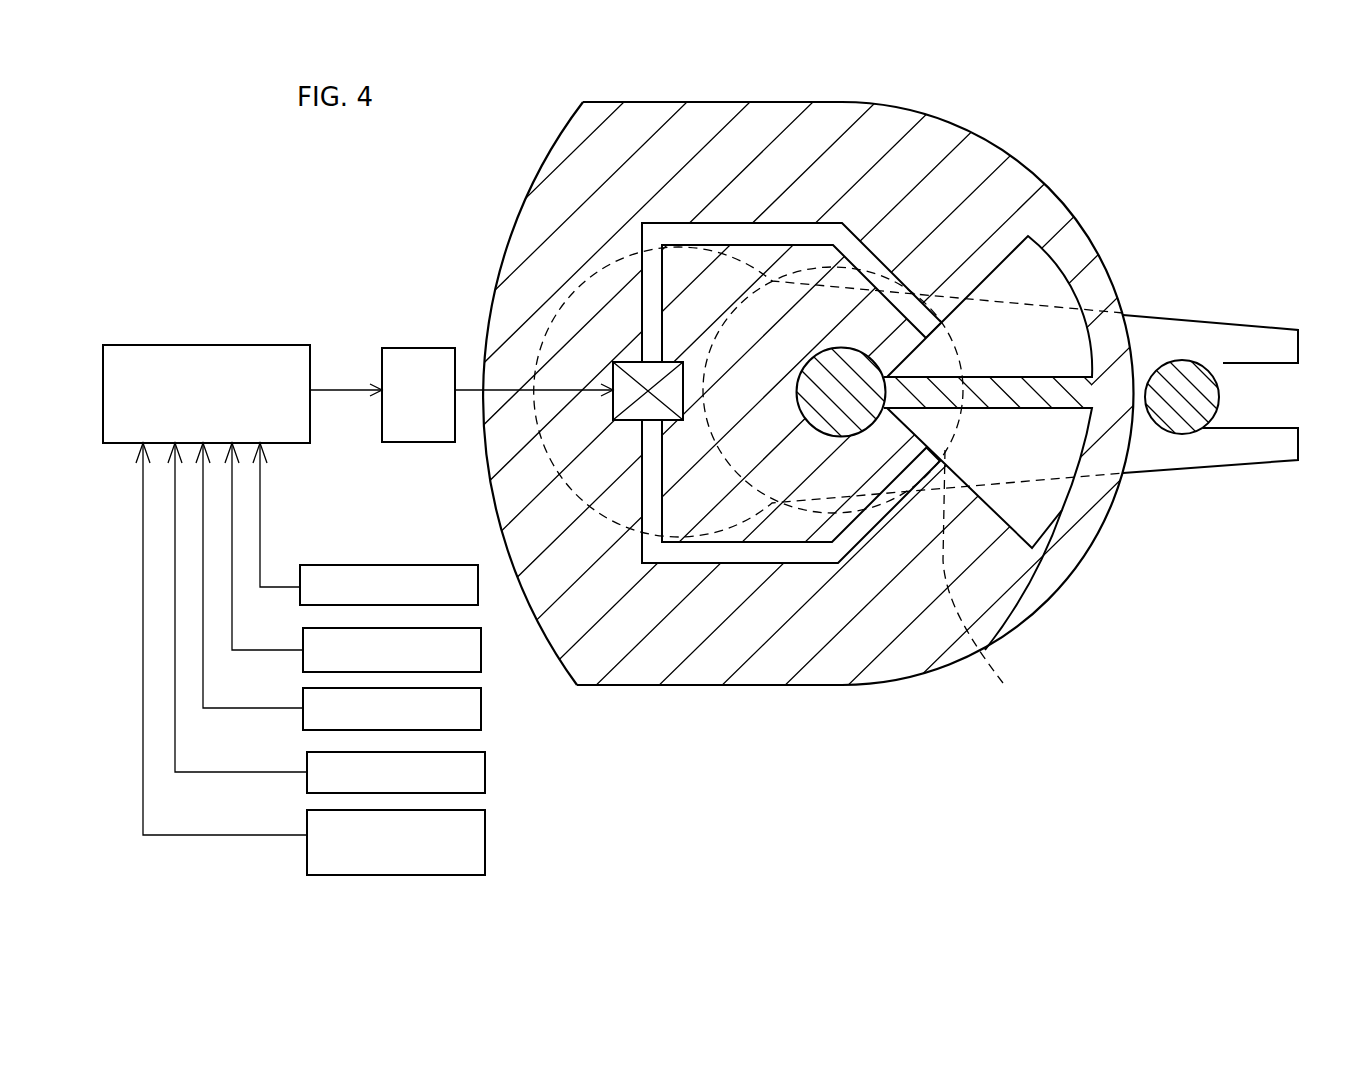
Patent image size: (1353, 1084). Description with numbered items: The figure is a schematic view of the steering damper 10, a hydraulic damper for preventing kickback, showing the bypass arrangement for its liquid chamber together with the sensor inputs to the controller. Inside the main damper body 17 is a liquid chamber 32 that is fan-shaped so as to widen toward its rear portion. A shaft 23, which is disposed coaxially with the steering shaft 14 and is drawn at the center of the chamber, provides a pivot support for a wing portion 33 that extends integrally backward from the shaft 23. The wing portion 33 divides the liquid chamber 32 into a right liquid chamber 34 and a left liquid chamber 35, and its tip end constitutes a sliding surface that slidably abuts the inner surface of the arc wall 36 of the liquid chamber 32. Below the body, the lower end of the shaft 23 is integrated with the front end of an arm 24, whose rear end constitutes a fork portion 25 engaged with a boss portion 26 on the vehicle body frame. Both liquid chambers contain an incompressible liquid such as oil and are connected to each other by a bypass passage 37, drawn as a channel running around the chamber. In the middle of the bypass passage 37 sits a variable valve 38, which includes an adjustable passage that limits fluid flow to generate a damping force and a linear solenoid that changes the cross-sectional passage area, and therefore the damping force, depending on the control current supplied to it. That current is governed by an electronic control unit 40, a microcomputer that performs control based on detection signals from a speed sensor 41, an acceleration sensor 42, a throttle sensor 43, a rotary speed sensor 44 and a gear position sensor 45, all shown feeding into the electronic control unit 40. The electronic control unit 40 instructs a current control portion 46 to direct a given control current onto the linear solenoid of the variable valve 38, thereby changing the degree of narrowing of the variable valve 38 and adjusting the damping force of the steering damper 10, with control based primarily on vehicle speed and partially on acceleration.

The steering damper 10 is at (676, 393).
The steering shaft 14 is at (872, 268).
The main damper body 17 is at (698, 687).
The shaft 23 is at (840, 428).
The arm 24 is at (985, 577).
The fork portion 25 is at (1252, 330).
The boss portion 26 is at (1200, 402).
The liquid chamber 32 is at (1065, 512).
The wing portion 33 is at (1110, 488).
The right liquid chamber 34 is at (1023, 268).
The left liquid chamber 35 is at (1018, 518).
The arc wall 36 is at (1065, 292).
The bypass passage 37 is at (778, 245).
The variable valve 38 is at (620, 368).
The electronic control unit 40 is at (178, 358).
The speed sensor 41 is at (372, 565).
The acceleration sensor 42 is at (463, 660).
The throttle sensor 43 is at (473, 718).
The rotary speed sensor 44 is at (473, 783).
The gear position sensor 45 is at (477, 848).
The current control portion 46 is at (388, 355).